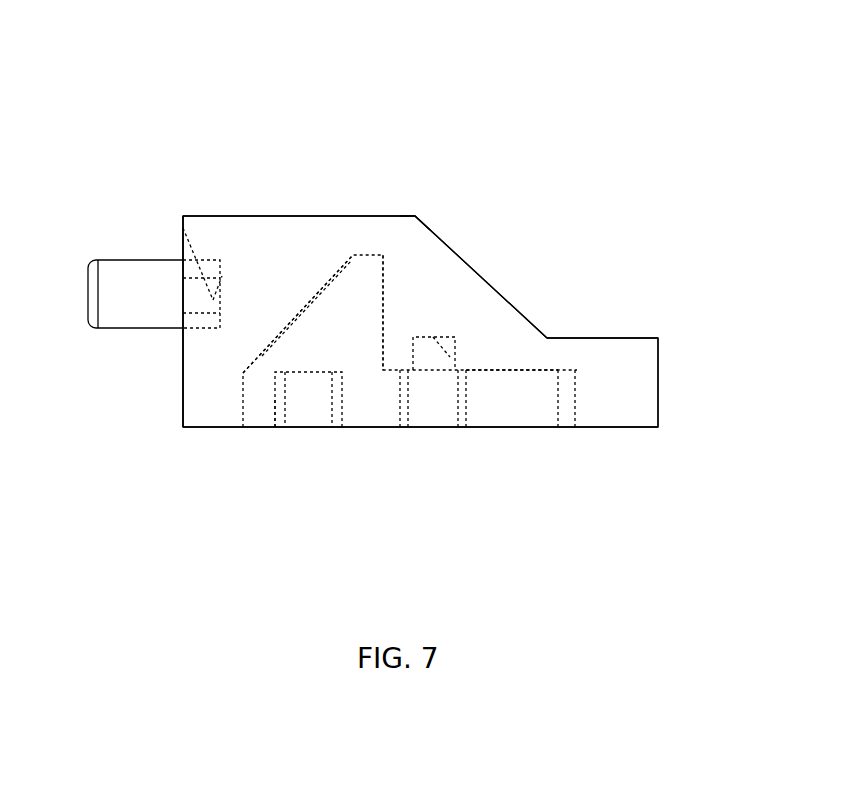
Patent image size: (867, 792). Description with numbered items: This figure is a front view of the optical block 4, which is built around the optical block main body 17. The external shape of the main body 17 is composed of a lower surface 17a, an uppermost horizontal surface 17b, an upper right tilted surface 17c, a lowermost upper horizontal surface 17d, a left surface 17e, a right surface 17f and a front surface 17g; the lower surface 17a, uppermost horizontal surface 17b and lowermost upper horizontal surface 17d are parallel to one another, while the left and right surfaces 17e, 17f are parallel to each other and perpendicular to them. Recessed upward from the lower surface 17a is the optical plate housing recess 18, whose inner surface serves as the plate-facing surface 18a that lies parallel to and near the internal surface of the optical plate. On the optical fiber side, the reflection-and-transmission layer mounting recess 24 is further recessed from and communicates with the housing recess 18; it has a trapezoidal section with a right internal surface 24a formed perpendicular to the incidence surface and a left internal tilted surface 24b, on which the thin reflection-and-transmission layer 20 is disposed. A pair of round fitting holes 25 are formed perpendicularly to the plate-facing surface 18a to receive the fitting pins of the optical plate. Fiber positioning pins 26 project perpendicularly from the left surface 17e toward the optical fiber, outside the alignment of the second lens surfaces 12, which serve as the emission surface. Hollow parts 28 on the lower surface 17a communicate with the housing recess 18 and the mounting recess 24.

The optical block 4 is at (113, 168).
The second lens surfaces 12 is at (183, 227).
The optical block main body 17 is at (308, 216).
The lower surface 17a is at (600, 427).
The uppermost horizontal surface 17b is at (374, 216).
The upper right tilted surface 17c is at (478, 270).
The lowermost upper horizontal surface 17d is at (592, 338).
The left surface 17e is at (183, 383).
The right surface 17f is at (660, 390).
The front surface 17g is at (407, 242).
The optical plate housing recess 18 is at (373, 398).
The plate-facing surface 18a is at (485, 372).
The reflection-and-transmission layer 20 is at (313, 290).
The reflection-and-transmission layer mounting recess 24 is at (320, 345).
The right internal surface 24a is at (373, 343).
The internal tilted surface 24b is at (275, 330).
The fitting holes 25 is at (433, 337).
The fiber positioning pins 26 is at (140, 330).
The hollow parts 28 is at (270, 400).